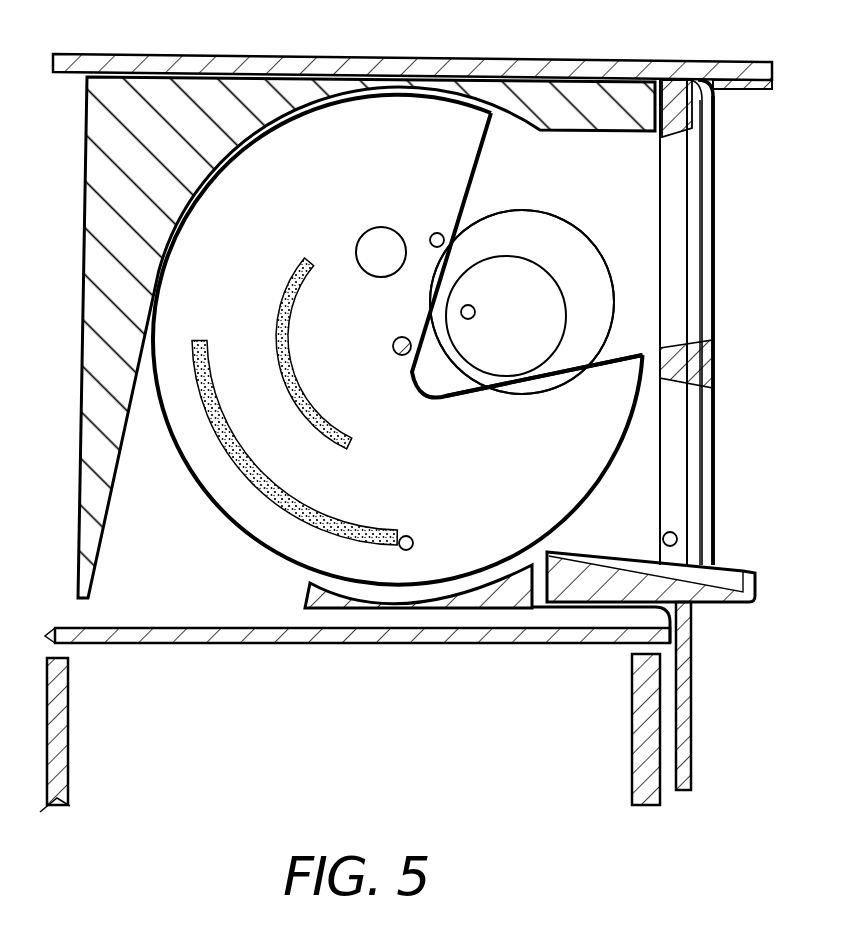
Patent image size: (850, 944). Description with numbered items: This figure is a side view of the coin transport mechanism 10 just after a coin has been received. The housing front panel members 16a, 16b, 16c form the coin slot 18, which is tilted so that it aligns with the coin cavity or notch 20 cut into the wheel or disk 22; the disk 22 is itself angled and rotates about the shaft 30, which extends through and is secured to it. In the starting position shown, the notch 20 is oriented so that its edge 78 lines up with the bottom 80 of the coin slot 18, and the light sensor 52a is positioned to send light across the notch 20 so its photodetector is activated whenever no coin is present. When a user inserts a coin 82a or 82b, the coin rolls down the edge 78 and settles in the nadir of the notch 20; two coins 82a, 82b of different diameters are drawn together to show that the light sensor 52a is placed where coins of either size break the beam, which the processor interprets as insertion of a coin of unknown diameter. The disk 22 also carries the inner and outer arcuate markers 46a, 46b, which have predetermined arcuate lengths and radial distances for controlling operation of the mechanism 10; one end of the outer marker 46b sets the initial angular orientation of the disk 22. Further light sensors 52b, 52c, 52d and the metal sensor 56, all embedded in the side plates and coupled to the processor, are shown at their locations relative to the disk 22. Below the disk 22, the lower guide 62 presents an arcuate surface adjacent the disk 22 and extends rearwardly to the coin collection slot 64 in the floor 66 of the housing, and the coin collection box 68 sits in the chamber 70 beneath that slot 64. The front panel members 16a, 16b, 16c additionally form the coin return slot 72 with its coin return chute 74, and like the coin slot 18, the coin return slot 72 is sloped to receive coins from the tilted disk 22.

The coin transport mechanism 10 is at (214, 706).
The front panel member 16a is at (712, 116).
The front panel member 16b is at (738, 88).
The front panel member 16c is at (666, 98).
The coin slot 18 is at (676, 270).
The coin cavity or notch 20 is at (525, 206).
The wheel or disk 22 is at (222, 512).
The shaft 30 is at (399, 338).
The inner arcuate marker or mask 46a is at (283, 328).
The outer arcuate marker or mask 46b is at (296, 504).
The light sensor 52a is at (476, 312).
The light sensor 52b is at (437, 232).
The light sensor 52c is at (414, 540).
The light sensor 52d is at (662, 539).
The metal sensor 56 is at (374, 230).
The lower guide 62 is at (465, 610).
The coin collection slot 64 is at (275, 636).
The floor 66 is at (440, 641).
The coin collection box 68 is at (70, 776).
The chamber 70 is at (366, 417).
The coin return slot 72 is at (674, 462).
The coin return chute 74 is at (760, 580).
The edge 78 is at (626, 350).
The bottom of coin insert slot 80 is at (713, 362).
The coin 82a is at (602, 240).
The coin 82b is at (554, 278).